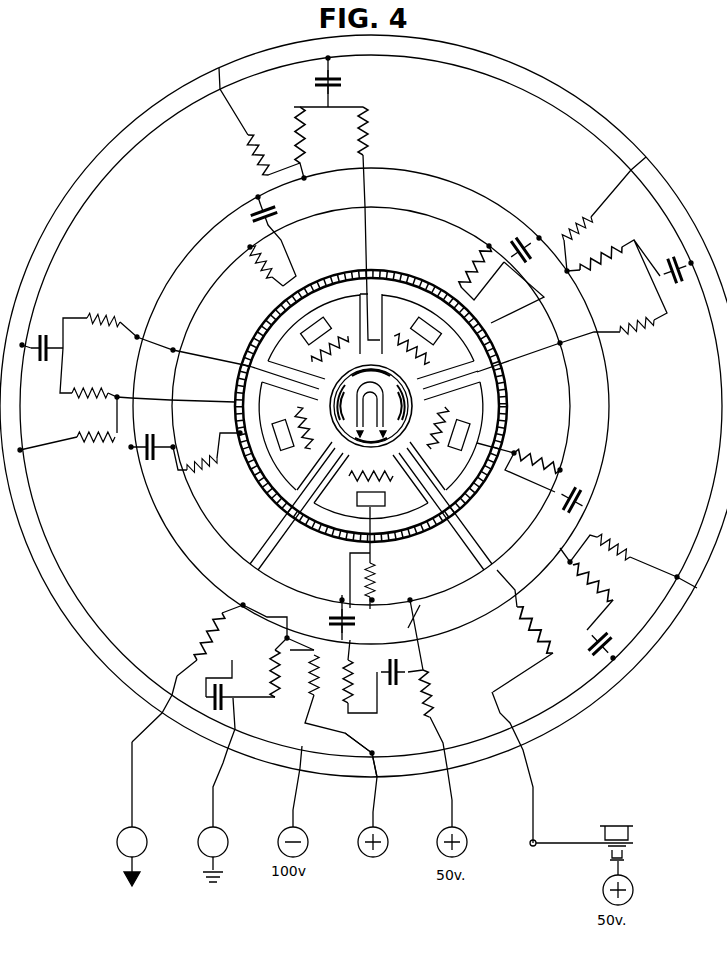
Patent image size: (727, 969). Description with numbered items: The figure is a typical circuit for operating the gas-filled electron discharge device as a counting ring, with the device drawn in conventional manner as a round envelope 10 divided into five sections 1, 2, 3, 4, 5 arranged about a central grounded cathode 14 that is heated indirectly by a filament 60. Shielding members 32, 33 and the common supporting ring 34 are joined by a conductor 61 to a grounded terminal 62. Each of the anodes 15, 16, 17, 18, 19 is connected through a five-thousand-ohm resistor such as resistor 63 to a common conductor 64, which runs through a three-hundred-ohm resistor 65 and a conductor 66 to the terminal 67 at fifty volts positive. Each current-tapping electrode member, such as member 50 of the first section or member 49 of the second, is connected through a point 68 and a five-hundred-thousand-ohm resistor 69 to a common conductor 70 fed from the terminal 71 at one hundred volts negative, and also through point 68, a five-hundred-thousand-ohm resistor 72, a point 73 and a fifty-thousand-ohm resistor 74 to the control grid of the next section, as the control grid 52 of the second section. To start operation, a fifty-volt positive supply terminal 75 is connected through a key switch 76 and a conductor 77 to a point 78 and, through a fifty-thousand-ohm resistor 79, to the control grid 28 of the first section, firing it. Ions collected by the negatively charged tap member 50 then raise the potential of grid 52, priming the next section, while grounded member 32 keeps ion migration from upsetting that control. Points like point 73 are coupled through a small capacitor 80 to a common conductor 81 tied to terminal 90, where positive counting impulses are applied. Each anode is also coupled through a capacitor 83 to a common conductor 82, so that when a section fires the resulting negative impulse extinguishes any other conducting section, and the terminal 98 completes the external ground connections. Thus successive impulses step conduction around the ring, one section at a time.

The section 1 is at (371, 487).
The section 2 is at (295, 436).
The section 3 is at (314, 336).
The section 4 is at (428, 336).
The section 5 is at (446, 436).
The stator ring 10 is at (270, 500).
The cathode 14 is at (371, 406).
The anode 15 is at (384, 498).
The anode 16 is at (284, 420).
The anode 17 is at (318, 334).
The anode 18 is at (412, 333).
The anode 19 is at (452, 444).
The control grid 28 is at (445, 509).
The shielding member 32 is at (340, 406).
The shielding member 33 is at (402, 423).
The supporting ring 34 is at (360, 372).
The tap member 49 is at (306, 426).
The current-tapping electrode member 50 is at (386, 470).
The control grid 52 is at (272, 374).
The filament 60 is at (377, 409).
The conductor 61 is at (296, 509).
The grounded terminal 62 is at (138, 838).
The resistor 63 is at (378, 576).
The common conductor 64 is at (438, 588).
The resistor 65 is at (436, 692).
The conductor 66 is at (452, 800).
The terminal 67 is at (461, 835).
The point 68 is at (266, 622).
The resistor 69 is at (294, 672).
The common conductor 70 is at (352, 781).
The terminal 71 is at (301, 834).
The resistor 72 is at (270, 660).
The point 73 is at (223, 675).
The resistor 74 is at (200, 628).
The supply terminal 75 is at (630, 886).
The key switch 76 is at (568, 840).
The conductor 77 is at (537, 818).
The point 78 is at (553, 657).
The resistor 79 is at (542, 632).
The capacitor 80 is at (232, 697).
The common conductor 81 is at (158, 670).
The common conductor 82 is at (192, 572).
The capacitor 83 is at (330, 616).
The terminal 90 is at (381, 834).
The ground terminal 98 is at (220, 835).